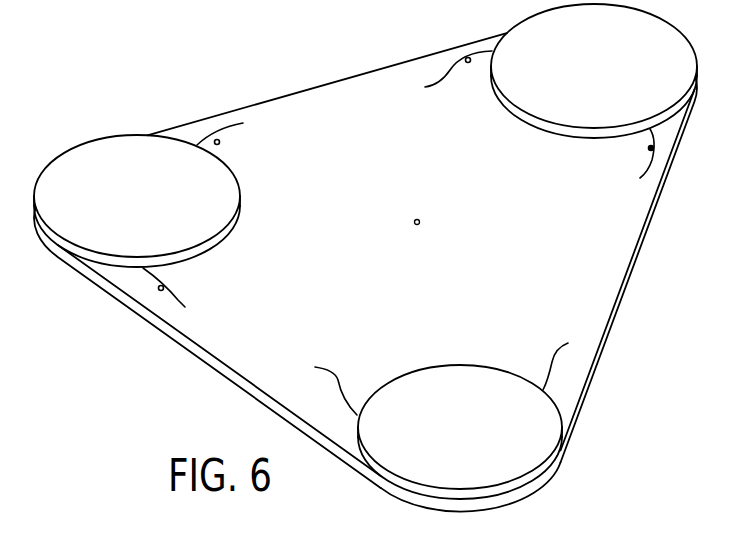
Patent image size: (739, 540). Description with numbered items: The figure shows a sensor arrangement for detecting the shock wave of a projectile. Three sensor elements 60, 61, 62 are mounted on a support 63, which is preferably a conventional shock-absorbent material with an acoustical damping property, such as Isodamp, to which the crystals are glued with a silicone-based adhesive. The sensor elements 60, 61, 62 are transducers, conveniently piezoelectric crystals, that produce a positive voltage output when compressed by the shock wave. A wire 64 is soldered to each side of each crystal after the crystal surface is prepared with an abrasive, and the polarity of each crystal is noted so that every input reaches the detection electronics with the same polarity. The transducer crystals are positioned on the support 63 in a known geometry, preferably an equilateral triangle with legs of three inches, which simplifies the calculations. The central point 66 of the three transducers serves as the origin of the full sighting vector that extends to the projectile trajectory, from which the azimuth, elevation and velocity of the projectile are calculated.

The sensor element 60 is at (588, 87).
The sensor element 61 is at (204, 205).
The sensor element 62 is at (443, 431).
The support 63 is at (360, 72).
The wire 64 is at (233, 128).
The central point 66 is at (419, 225).